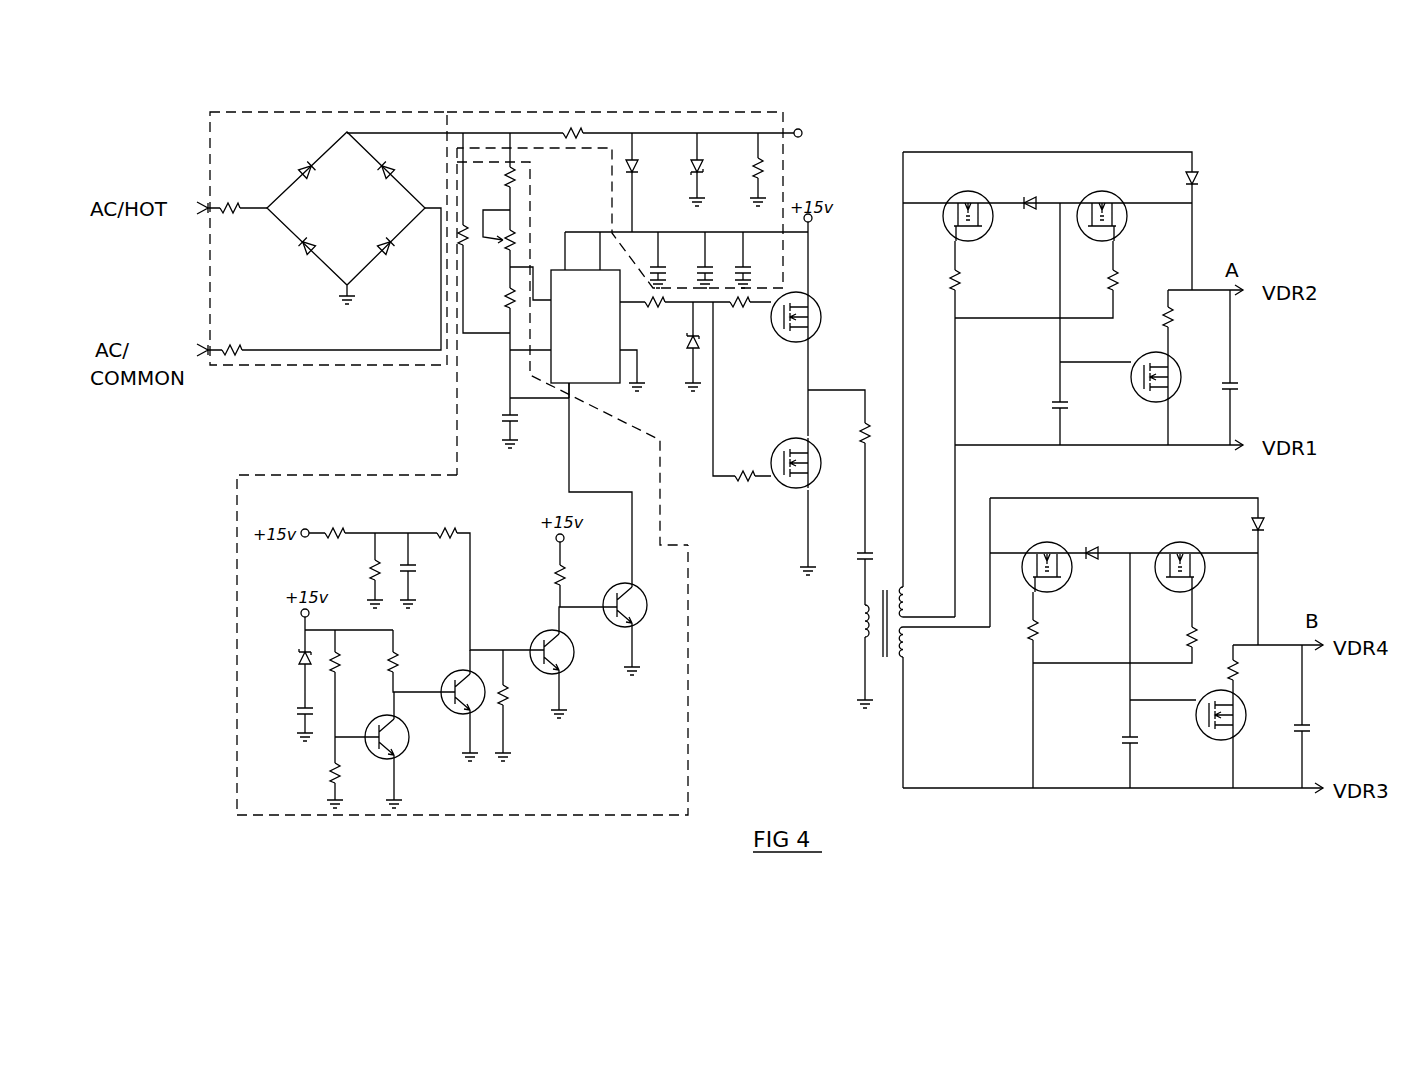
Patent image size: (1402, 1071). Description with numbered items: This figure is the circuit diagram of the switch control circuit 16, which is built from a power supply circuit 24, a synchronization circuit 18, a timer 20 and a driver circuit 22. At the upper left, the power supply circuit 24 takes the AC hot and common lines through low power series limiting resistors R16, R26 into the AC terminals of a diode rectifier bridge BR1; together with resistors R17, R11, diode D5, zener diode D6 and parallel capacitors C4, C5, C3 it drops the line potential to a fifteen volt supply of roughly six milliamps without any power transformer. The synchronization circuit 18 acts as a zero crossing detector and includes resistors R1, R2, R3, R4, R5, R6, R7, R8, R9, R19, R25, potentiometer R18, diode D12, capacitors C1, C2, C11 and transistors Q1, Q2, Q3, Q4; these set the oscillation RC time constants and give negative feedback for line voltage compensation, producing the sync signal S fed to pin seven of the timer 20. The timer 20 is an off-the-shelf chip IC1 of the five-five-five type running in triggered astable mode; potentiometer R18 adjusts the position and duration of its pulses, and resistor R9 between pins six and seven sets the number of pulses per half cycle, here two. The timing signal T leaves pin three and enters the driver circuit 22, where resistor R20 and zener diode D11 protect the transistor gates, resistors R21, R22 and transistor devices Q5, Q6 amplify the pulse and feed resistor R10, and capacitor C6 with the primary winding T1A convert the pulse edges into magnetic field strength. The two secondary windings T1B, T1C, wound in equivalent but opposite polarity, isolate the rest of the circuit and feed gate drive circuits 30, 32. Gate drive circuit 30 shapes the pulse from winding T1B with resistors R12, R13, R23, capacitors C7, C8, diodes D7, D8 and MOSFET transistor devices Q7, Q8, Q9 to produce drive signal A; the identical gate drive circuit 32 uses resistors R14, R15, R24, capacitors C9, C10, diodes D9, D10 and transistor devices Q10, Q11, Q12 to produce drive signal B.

The switch control circuit 16 is at (486, 88).
The power supply circuit 24 is at (720, 112).
The timer 20 is at (604, 386).
The synchronization circuit 18 is at (690, 660).
The driver circuit 22 is at (865, 212).
The gate drive circuit 30 is at (1165, 152).
The gate drive circuit 32 is at (1248, 498).
The diode rectifier bridge BR1 is at (326, 151).
The series limiting resistor R16 is at (233, 206).
The series limiting resistor R26 is at (234, 348).
The resistor R17 is at (573, 130).
The resistor R25 is at (508, 178).
The potentiometer R18 is at (512, 238).
The resistor R19 is at (468, 237).
The resistor R9 is at (504, 300).
The capacitor C2 is at (496, 423).
The 555 timer chip IC1 is at (588, 315).
The resistor R20 is at (656, 308).
The resistor R21 is at (742, 308).
The zener diode D11 is at (690, 352).
The resistor R22 is at (744, 480).
The diode D5 is at (637, 170).
The zener diode D6 is at (700, 176).
The resistor R11 is at (766, 163).
The capacitor C4 is at (645, 260).
The capacitor C5 is at (692, 260).
The capacitor C3 is at (755, 260).
The transistor device Q6 is at (796, 342).
The transistor device Q5 is at (788, 438).
The resistor R10 is at (860, 433).
The capacitor C6 is at (849, 558).
The primary winding T1A is at (840, 621).
The secondary winding T1B is at (921, 602).
The secondary winding T1C is at (921, 644).
The diode D8 is at (1200, 180).
The MOSFET transistor device Q8 is at (980, 200).
The MOSFET transistor device Q7 is at (1115, 200).
The diode D7 is at (1030, 210).
The resistor R23 is at (960, 282).
The resistor R12 is at (1118, 280).
The capacitor C7 is at (1044, 405).
The MOSFET transistor device Q9 is at (1140, 402).
The resistor R13 is at (1172, 316).
The capacitor C8 is at (1245, 388).
The diode D10 is at (1266, 522).
The transistor device Q11 is at (1040, 548).
The transistor device Q10 is at (1192, 548).
The diode D9 is at (1094, 548).
The resistor R24 is at (1040, 632).
The resistor R14 is at (1196, 638).
The capacitor C9 is at (1114, 743).
The transistor device Q12 is at (1205, 740).
The resistor R15 is at (1238, 668).
The capacitor C10 is at (1320, 733).
The resistor R8 is at (334, 531).
The resistor R2 is at (450, 531).
The resistor R1 is at (371, 568).
The capacitor C1 is at (422, 571).
The diode D12 is at (300, 662).
The capacitor C11 is at (279, 715).
The resistor R4 is at (340, 662).
The resistor R5 is at (398, 660).
The resistor R3 is at (340, 776).
The transistor Q1 is at (375, 722).
The transistor Q2 is at (457, 712).
The resistor R6 is at (507, 690).
The transistor Q3 is at (533, 640).
The resistor R7 is at (556, 570).
The transistor Q4 is at (612, 590).